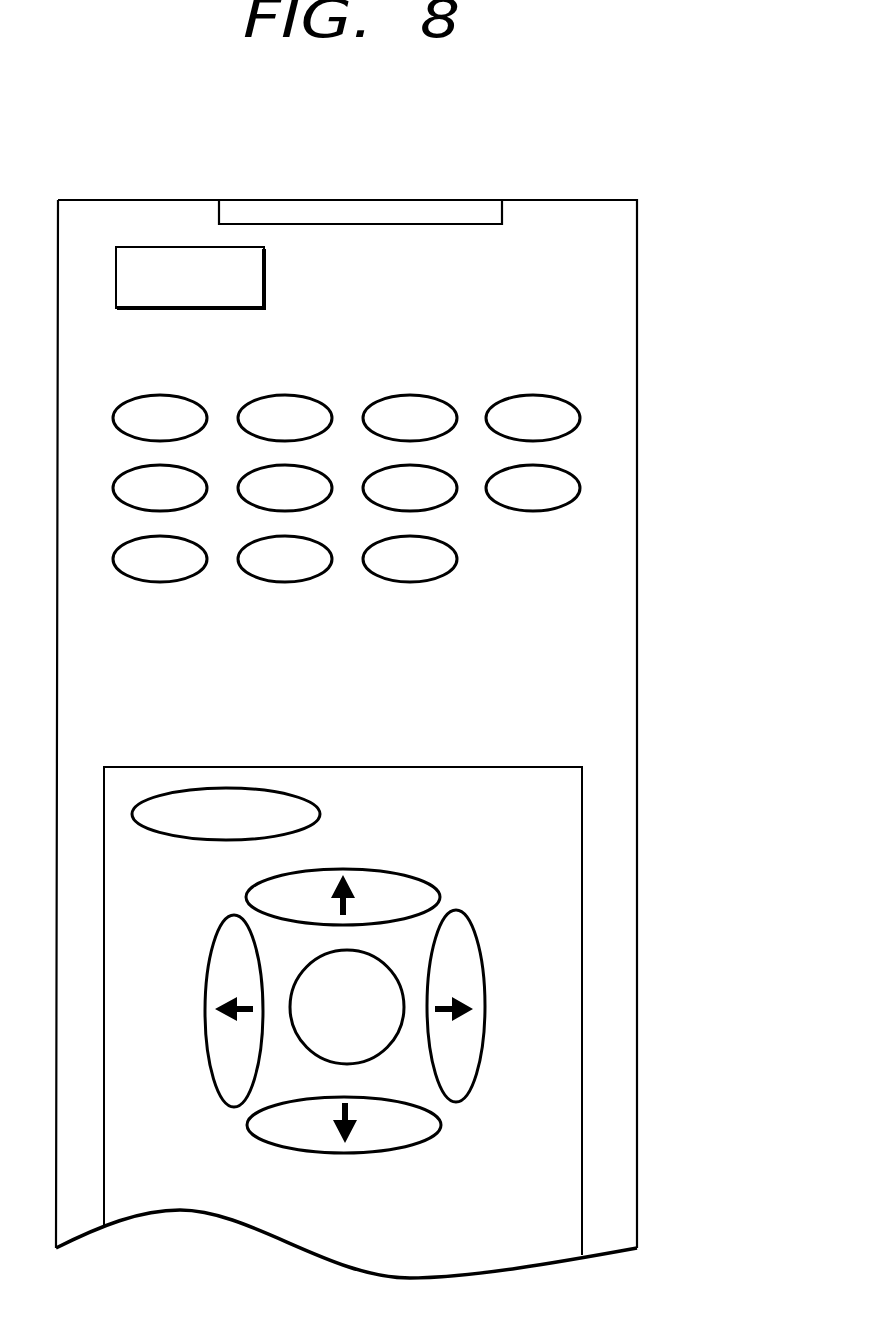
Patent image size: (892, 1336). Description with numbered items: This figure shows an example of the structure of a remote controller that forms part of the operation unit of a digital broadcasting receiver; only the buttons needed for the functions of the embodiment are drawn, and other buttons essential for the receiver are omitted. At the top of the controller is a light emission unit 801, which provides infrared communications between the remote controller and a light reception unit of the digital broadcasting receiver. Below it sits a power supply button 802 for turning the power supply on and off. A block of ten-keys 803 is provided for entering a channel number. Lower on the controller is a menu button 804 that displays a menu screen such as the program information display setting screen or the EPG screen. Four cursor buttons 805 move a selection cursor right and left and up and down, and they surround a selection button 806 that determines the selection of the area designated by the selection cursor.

The light emission unit 801 is at (368, 208).
The power supply button 802 is at (264, 277).
The ten-keys 803 is at (587, 392).
The menu button 804 is at (222, 787).
The cursor buttons 805 is at (457, 927).
The selection button 806 is at (365, 1028).